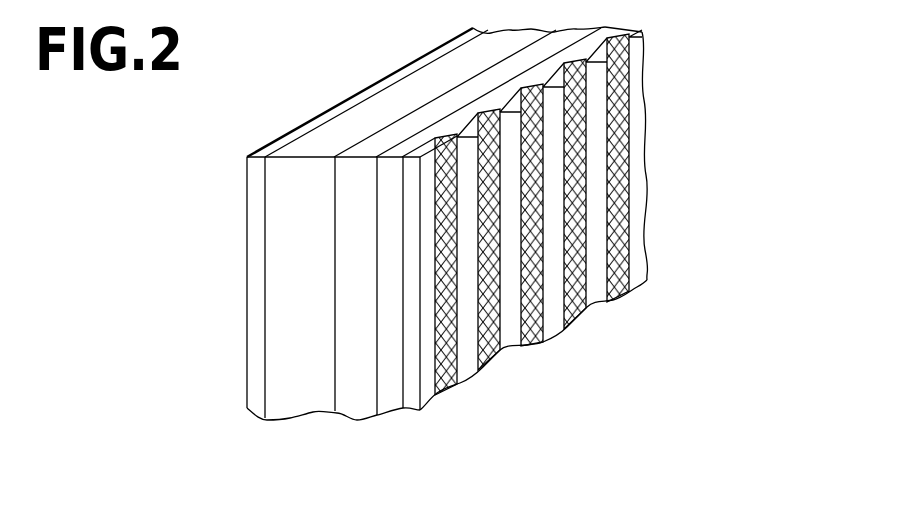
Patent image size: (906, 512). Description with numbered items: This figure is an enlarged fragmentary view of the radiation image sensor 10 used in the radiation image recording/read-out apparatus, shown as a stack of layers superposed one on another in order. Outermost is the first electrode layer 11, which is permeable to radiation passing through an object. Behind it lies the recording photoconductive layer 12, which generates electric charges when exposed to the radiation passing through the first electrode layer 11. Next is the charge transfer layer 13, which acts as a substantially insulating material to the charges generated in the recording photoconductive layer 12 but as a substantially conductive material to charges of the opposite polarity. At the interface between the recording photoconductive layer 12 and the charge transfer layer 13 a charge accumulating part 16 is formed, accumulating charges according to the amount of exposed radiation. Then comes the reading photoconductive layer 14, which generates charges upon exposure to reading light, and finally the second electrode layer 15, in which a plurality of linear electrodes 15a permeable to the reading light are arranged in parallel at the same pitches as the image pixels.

The radiation image sensor 10 is at (299, 114).
The first electrode layer 11 is at (256, 410).
The recording photoconductive layer 12 is at (285, 420).
The charge accumulating part 16 is at (331, 385).
The charge transfer layer 13 is at (360, 416).
The reading photoconductive layer 14 is at (397, 409).
The second electrode layer 15 is at (412, 408).
The linear electrodes 15a is at (487, 358).